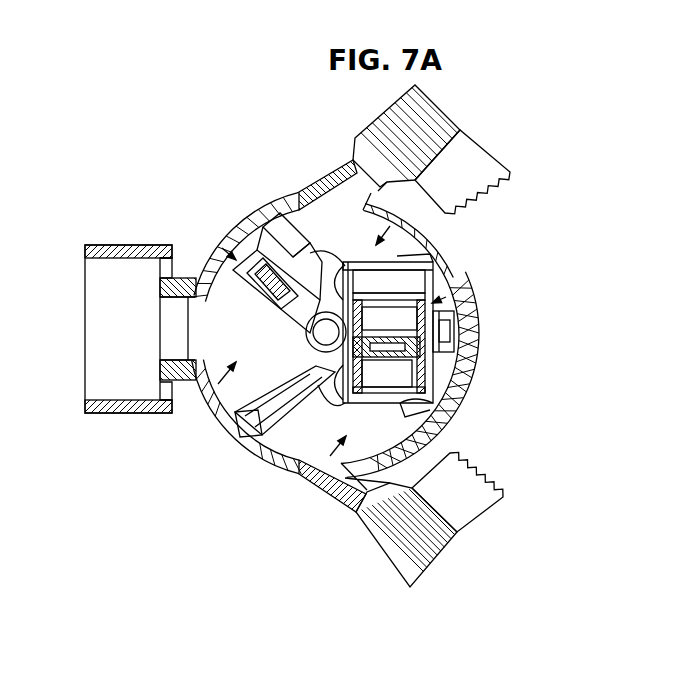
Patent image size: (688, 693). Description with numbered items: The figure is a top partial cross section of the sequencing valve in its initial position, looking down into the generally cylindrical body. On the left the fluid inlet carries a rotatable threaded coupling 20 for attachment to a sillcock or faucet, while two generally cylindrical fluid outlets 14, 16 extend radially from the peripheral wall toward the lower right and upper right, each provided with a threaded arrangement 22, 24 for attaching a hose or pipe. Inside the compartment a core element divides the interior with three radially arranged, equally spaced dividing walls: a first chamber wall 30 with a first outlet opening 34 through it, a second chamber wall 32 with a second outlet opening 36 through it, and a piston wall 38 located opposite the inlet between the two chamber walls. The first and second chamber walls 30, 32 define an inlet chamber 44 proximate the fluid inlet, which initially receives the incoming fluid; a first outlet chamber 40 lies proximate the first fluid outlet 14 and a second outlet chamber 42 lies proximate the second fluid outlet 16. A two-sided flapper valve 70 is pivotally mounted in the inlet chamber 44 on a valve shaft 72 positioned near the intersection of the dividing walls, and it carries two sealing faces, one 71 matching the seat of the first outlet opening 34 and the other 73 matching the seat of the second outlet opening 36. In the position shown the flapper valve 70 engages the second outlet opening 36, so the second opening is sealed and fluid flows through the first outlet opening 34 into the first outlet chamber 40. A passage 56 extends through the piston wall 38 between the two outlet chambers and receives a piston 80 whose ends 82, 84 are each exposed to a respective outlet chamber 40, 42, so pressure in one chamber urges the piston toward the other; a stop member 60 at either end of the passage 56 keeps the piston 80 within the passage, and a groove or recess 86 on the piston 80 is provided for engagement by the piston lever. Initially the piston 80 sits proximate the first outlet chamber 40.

The fluid outlet 14 is at (353, 510).
The fluid outlet 16 is at (372, 172).
The coupling 20 is at (125, 246).
The threaded arrangement 22 is at (373, 553).
The threaded arrangement 24 is at (368, 140).
The first chamber wall 30 is at (245, 420).
The second chamber wall 32 is at (262, 225).
The first outlet opening 34 is at (287, 456).
The second outlet opening 36 is at (288, 250).
The piston wall 38 is at (448, 334).
The first outlet chamber 40 is at (318, 480).
The second outlet chamber 42 is at (437, 228).
The inlet chamber 44 is at (217, 387).
The passage 56 is at (427, 373).
The stop member 60 is at (492, 482).
The flapper valve 70 is at (201, 258).
The sealing face 71 is at (240, 275).
The valve shaft 72 is at (303, 340).
The sealing face 73 is at (222, 248).
The piston 80 is at (446, 297).
The piston end 82 is at (405, 405).
The piston end 84 is at (413, 290).
The recess 86 is at (427, 357).